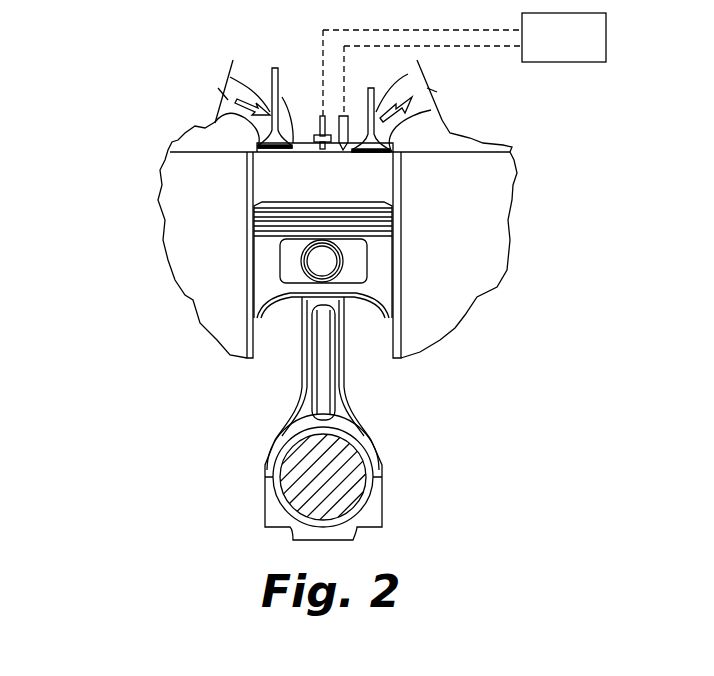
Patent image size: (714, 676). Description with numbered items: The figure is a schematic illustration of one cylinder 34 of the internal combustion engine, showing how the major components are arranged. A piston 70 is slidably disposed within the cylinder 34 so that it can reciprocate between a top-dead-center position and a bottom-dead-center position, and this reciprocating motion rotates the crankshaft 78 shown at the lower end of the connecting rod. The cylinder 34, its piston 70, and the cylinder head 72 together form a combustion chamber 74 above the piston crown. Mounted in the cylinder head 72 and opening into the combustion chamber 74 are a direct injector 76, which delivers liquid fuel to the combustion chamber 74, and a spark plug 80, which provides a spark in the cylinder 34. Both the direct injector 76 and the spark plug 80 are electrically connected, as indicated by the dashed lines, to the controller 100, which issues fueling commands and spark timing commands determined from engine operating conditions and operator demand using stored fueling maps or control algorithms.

The cylinder 34 is at (550, 203).
The piston 70 is at (377, 250).
The cylinder head 72 is at (250, 156).
The combustion chamber 74 is at (380, 172).
The direct injector 76 is at (350, 137).
The crankshaft 78 is at (340, 453).
The spark plug 80 is at (321, 118).
The controller 100 is at (583, 50).